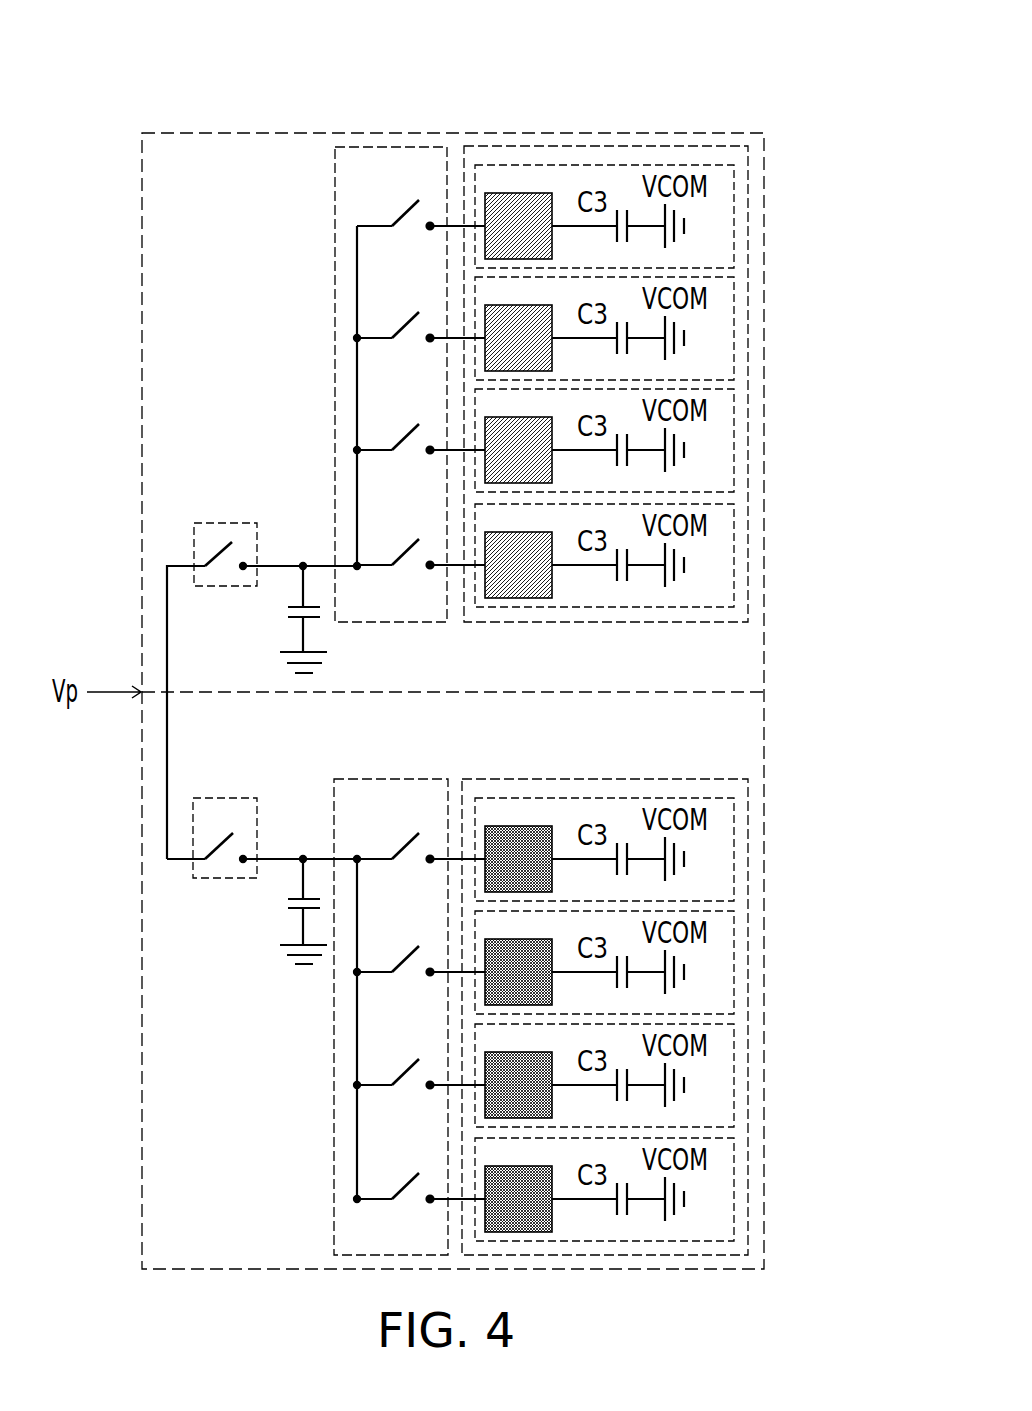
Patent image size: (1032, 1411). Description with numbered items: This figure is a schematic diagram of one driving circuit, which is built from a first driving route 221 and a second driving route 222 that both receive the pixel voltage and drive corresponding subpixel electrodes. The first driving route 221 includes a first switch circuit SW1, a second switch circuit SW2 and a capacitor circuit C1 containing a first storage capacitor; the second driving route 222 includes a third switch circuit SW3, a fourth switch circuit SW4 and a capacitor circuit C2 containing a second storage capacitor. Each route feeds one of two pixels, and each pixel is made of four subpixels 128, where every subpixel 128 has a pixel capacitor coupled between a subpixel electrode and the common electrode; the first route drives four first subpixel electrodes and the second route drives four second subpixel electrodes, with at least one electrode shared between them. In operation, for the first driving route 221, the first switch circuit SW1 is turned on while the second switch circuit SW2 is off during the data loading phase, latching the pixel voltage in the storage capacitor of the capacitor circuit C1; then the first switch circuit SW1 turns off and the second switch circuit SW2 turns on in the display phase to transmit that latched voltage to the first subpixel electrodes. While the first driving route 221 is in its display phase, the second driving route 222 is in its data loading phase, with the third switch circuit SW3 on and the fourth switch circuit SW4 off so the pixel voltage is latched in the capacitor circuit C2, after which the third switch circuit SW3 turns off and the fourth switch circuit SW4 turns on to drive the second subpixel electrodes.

The first driving route 221 is at (661, 327).
The second driving route 222 is at (764, 1236).
The subpixel 128 is at (661, 155).
The first switch circuit SW1 is at (218, 523).
The second switch circuit SW2 is at (389, 147).
The third switch circuit SW3 is at (218, 878).
The fourth switch circuit SW4 is at (390, 779).
The capacitor circuit C1 is at (286, 619).
The capacitor circuit C2 is at (287, 911).